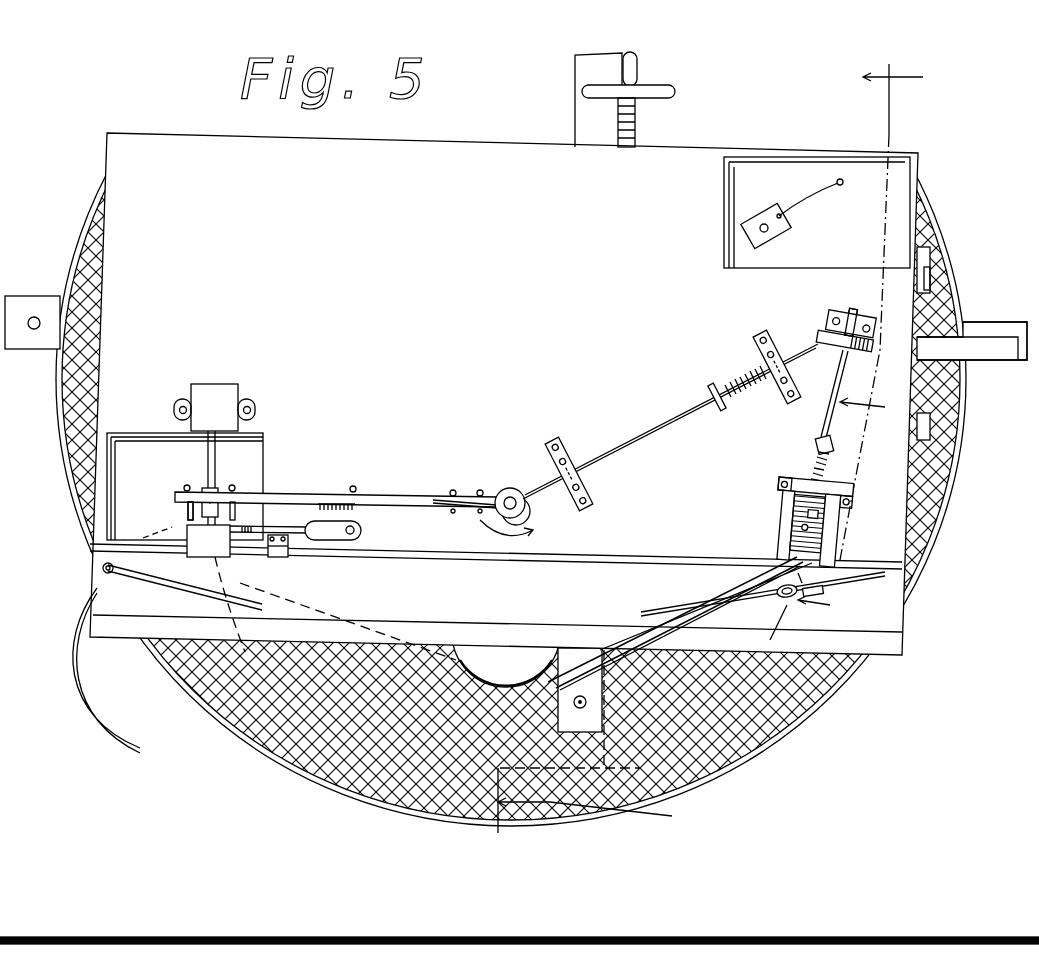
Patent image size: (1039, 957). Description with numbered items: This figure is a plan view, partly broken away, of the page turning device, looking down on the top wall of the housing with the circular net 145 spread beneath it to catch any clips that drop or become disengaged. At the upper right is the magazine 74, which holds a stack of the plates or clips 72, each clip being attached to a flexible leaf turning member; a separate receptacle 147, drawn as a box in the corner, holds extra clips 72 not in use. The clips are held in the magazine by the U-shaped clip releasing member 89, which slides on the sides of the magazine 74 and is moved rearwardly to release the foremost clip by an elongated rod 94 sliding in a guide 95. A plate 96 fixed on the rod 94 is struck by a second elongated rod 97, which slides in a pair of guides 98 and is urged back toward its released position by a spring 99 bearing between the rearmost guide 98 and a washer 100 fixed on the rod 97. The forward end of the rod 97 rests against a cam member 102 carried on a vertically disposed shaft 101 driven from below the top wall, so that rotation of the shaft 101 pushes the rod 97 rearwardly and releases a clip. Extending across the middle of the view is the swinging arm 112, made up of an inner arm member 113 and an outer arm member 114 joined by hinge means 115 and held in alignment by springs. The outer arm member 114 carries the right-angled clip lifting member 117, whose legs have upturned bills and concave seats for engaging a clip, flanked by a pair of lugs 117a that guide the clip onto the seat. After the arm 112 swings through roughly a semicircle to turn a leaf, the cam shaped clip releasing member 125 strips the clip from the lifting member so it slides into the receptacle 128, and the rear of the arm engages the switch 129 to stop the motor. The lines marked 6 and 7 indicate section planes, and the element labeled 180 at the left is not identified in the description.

The section line 6- 6 is at (722, 448).
The section line 7- 7 is at (850, 509).
The plate 72 is at (772, 212).
The magazine 74 is at (771, 526).
The U-shaped clip releasing member 89 is at (838, 523).
The elongated rod 94 is at (845, 373).
The guide 95 is at (840, 318).
The plate 96 is at (818, 333).
The elongated rod 97 is at (657, 436).
The guides 98 is at (569, 442).
The spring 99 is at (745, 398).
The washer 100 is at (716, 390).
The vertically disposed shaft 101 is at (510, 503).
The cam member 102 is at (538, 518).
The swinging arm 112 is at (309, 489).
The inner arm member 113 is at (405, 500).
The outer arm member 114 is at (257, 487).
The hinge means 115 is at (353, 487).
The U-shaped member 117 is at (187, 553).
The lugs 117a is at (185, 512).
The cam shaped clip releasing member 125 is at (227, 550).
The receptacle 128 is at (263, 457).
The switch 129 is at (230, 400).
The net 145 is at (836, 696).
The receptacle 147 is at (757, 255).
The frame 180 is at (208, 463).